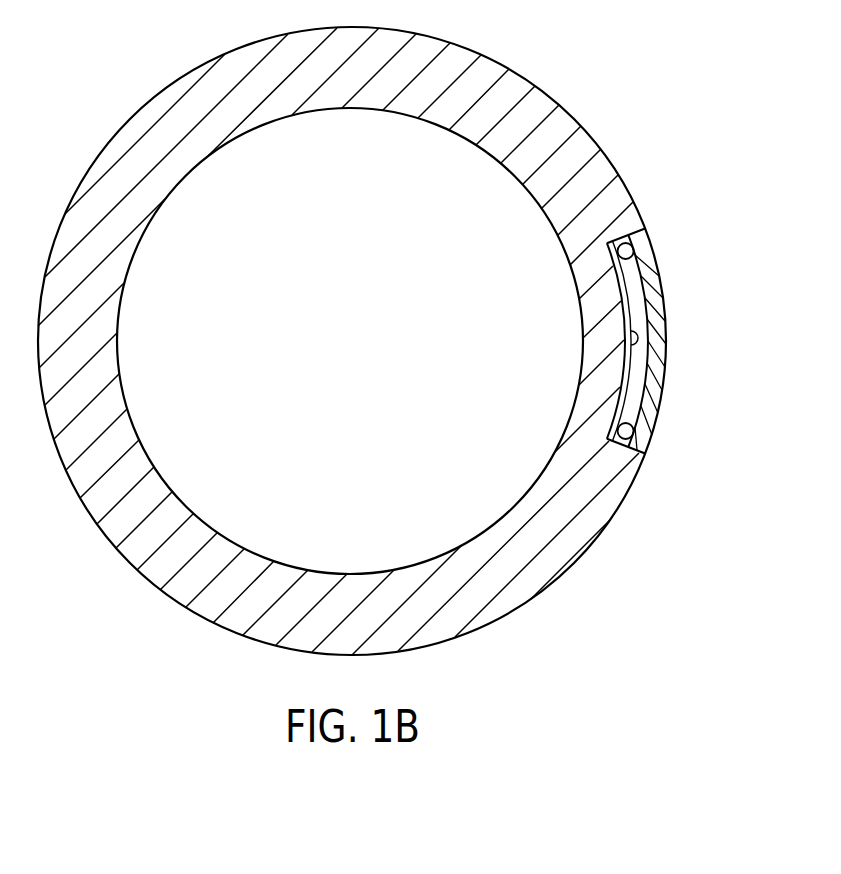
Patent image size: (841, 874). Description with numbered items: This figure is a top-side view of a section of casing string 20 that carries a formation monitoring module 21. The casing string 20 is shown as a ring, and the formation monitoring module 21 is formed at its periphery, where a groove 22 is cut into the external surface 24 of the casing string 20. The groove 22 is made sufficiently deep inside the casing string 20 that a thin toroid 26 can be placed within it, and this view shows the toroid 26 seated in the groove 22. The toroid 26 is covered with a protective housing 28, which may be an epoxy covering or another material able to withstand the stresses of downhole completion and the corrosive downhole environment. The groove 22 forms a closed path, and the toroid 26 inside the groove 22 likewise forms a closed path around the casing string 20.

The casing string 20 is at (617, 510).
The formation monitoring module 21 is at (712, 319).
The groove 22 is at (633, 338).
The external surface 24 is at (589, 136).
The toroid 26 is at (633, 392).
The protective housing 28 is at (650, 260).